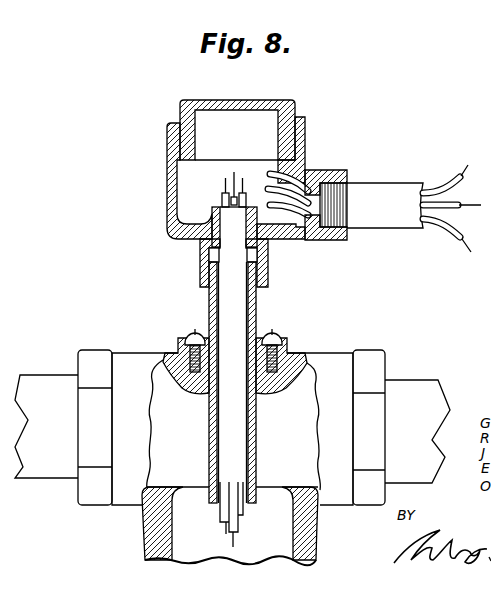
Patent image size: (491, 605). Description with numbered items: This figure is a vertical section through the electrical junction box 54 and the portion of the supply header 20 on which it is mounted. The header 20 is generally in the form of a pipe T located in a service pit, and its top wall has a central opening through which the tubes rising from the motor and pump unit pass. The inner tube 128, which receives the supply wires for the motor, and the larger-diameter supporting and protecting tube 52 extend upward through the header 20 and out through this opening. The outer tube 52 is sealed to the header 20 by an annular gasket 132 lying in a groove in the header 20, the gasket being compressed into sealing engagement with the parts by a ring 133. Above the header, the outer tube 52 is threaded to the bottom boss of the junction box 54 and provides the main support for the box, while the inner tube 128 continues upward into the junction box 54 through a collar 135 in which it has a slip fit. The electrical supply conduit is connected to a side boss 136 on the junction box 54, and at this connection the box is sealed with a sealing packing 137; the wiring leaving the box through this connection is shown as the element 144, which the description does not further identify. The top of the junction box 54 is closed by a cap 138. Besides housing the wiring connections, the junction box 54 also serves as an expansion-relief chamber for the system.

The supply header 20 is at (340, 392).
The supporting and protecting tube 52 is at (207, 297).
The junction box 54 is at (166, 144).
The tube 128 is at (230, 231).
The annular gasket 132 is at (284, 349).
The ring 133 is at (284, 334).
The collar 135 is at (212, 211).
The side boss 136 is at (326, 241).
The sealing packing 137 is at (323, 171).
The cap 138 is at (258, 100).
The cable 144 is at (405, 229).